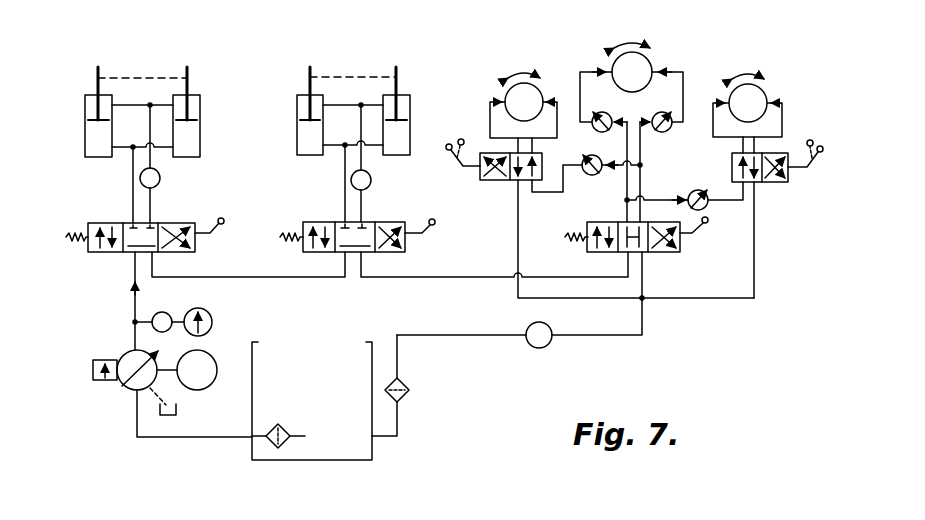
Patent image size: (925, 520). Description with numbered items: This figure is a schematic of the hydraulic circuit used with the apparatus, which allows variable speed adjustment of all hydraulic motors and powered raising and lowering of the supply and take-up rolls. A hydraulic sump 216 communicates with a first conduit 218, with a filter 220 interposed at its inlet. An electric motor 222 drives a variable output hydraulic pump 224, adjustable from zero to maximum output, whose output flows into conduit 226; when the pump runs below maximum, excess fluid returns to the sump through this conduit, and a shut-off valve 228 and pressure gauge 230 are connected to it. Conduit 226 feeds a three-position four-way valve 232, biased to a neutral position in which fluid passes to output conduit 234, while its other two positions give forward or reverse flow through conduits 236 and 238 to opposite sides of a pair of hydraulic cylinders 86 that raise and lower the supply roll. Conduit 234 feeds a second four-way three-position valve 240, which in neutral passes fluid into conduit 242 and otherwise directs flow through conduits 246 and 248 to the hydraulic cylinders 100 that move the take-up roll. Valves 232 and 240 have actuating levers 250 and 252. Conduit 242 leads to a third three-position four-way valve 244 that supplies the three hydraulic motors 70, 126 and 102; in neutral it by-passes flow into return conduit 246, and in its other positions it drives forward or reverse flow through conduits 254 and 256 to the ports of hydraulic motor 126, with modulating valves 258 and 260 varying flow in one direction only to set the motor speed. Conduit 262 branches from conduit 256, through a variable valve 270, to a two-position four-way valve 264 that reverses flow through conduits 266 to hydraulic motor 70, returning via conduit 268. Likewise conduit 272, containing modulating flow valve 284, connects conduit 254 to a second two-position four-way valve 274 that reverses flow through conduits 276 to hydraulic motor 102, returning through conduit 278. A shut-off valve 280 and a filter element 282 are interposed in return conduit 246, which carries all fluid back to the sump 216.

The hydraulic cylinders 86 is at (85, 110).
The hydraulic cylinders 100 is at (297, 110).
The hydraulic motor 70 is at (508, 88).
The hydraulic motor 126 is at (616, 64).
The hydraulic motor 102 is at (767, 96).
The conduit 236 is at (133, 180).
The conduit 238 is at (156, 192).
The three-position four-way valve 232 is at (92, 225).
The actuating lever 250 is at (214, 220).
The output conduit 234 is at (227, 277).
The conduit 226 is at (135, 300).
The shut-off valve 228 is at (164, 312).
The pressure gauge 230 is at (212, 312).
The variable output hydraulic pump 224 is at (122, 352).
The electric motor 222 is at (212, 356).
The first conduit 218 is at (165, 437).
The filter 220 is at (282, 424).
The hydraulic sump 216 is at (304, 460).
The filter element 282 is at (409, 393).
The shut-off valve 280 is at (546, 346).
The conduit 246 is at (620, 335).
The conduit 248 is at (366, 190).
The four-way three-position hydraulic valve 240 is at (386, 222).
The actuating lever 252 is at (434, 224).
The conduit 242 is at (431, 277).
The two-position four-way valve 264 is at (482, 158).
The conduits 266 is at (553, 131).
The conduit 262 is at (530, 180).
The conduit 268 is at (518, 268).
The modulating valve 258 is at (596, 130).
The modulating valve 260 is at (668, 130).
The conduit 254 is at (627, 190).
The conduit 256 is at (640, 166).
The variable valve 270 is at (590, 176).
The modulating flow valve 284 is at (690, 192).
The conduit 272 is at (724, 200).
The three-position four-way valve 244 is at (670, 252).
The conduit 278 is at (754, 274).
The conduits 276 is at (778, 131).
The two-position four-way valve 274 is at (776, 182).